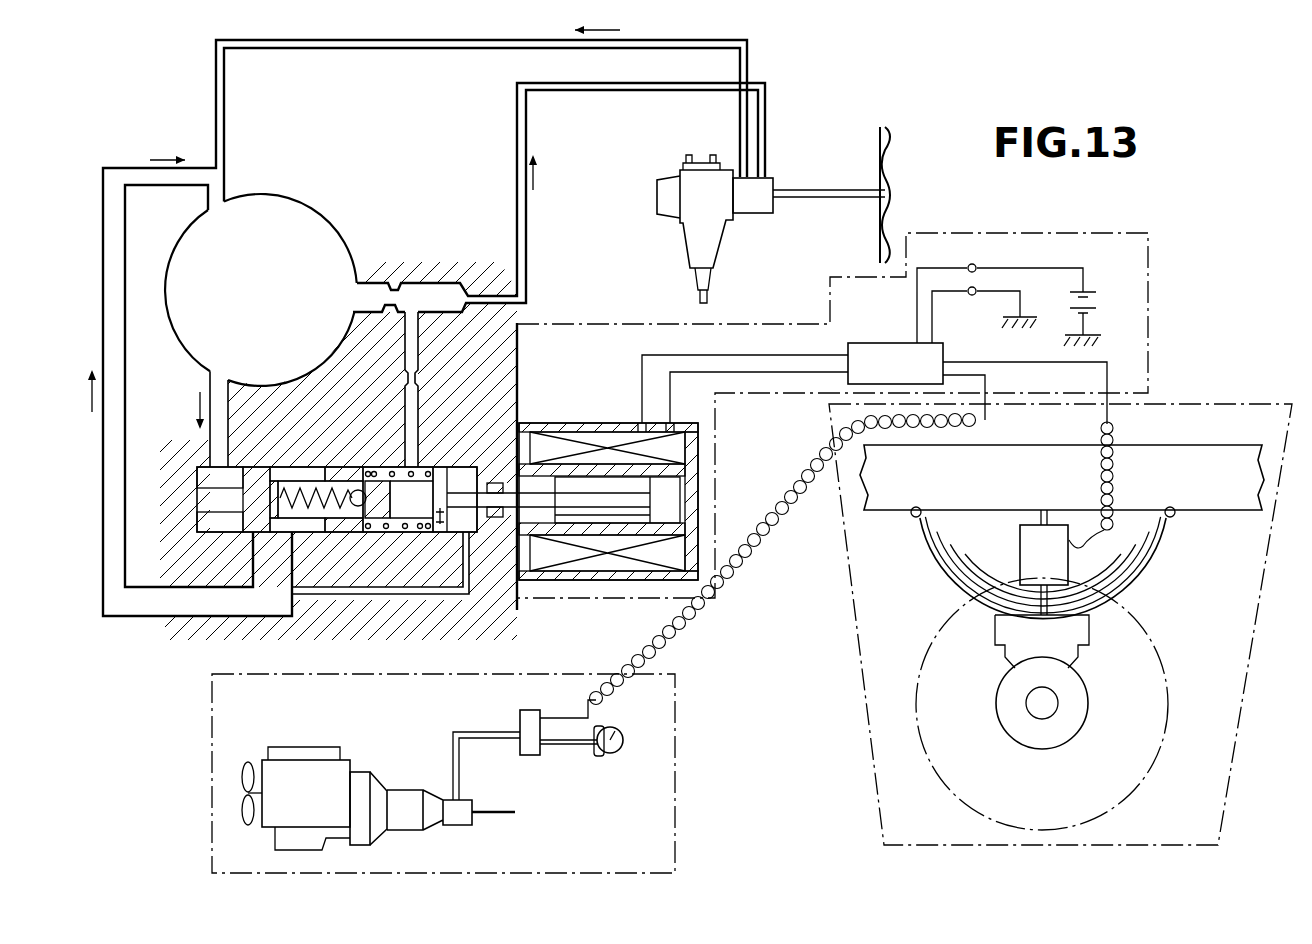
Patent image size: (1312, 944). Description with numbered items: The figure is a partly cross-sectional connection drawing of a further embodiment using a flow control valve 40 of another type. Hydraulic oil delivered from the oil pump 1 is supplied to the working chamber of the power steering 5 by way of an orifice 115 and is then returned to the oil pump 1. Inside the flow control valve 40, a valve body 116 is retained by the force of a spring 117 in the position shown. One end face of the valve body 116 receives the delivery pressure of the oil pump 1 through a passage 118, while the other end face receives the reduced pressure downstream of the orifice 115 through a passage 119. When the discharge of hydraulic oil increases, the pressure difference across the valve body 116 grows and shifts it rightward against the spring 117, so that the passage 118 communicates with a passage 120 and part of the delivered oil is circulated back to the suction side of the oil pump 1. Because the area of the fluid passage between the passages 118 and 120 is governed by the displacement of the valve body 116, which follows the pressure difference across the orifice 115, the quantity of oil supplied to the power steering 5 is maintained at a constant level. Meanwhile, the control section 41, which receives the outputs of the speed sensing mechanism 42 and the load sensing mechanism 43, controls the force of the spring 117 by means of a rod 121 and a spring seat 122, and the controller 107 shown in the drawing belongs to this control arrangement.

The oil pump 1 is at (315, 240).
The power steering 5 is at (722, 252).
The flow control valve 40 is at (337, 495).
The control section 41 is at (1156, 294).
The speed sensing mechanism 42 is at (205, 732).
The load sensing mechanism 43 is at (840, 606).
The controller 107 is at (883, 343).
The orifice 115 is at (393, 291).
The valve body 116 is at (340, 528).
The spring 117 is at (420, 468).
The passage 118 is at (228, 425).
The passage 119 is at (412, 357).
The passage 120 is at (203, 600).
The rod 121 is at (503, 517).
The spring seat 122 is at (440, 524).